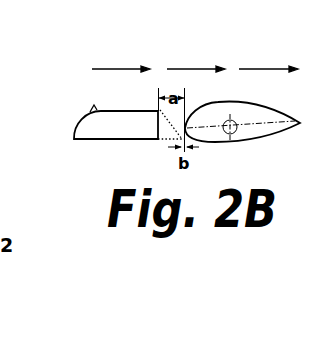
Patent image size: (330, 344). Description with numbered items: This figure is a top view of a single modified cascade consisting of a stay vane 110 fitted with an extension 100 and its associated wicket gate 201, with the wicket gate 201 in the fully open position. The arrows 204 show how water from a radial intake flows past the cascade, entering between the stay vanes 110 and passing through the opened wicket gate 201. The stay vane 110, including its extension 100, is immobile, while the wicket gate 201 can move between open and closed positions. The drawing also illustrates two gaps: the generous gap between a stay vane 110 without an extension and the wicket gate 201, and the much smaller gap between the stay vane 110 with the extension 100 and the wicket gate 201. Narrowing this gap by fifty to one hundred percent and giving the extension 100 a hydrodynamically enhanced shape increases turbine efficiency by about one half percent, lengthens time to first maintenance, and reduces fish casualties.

The arrows 204 is at (132, 62).
The extension 100 is at (162, 138).
The stay vane 110 is at (90, 112).
The wicket gate 201 is at (268, 138).